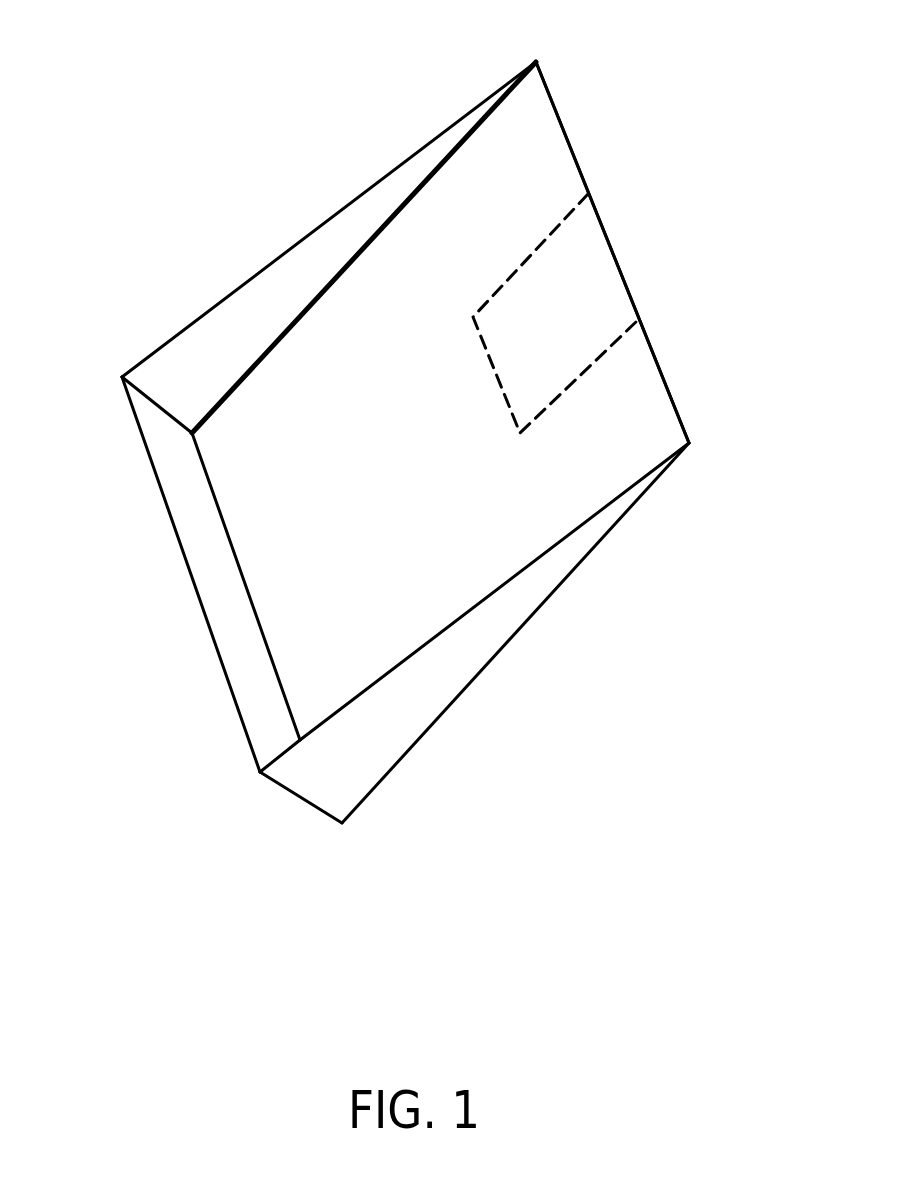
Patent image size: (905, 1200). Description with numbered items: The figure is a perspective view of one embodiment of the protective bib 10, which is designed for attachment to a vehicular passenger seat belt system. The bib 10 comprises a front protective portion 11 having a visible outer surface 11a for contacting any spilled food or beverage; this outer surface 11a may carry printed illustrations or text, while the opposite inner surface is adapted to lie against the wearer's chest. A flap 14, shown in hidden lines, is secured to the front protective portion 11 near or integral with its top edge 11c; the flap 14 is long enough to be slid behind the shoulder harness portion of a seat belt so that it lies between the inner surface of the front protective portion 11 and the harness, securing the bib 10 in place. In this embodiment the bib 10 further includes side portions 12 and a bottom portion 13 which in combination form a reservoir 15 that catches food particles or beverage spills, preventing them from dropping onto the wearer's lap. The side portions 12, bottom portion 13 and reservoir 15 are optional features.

The bib 10 is at (313, 98).
The front protective portion 11 is at (636, 455).
The outer surface 11a is at (528, 164).
The top edge 11c is at (660, 365).
The side portions 12 is at (207, 357).
The bottom portion 13 is at (175, 474).
The flap 14 is at (554, 307).
The reservoir 15 is at (267, 650).